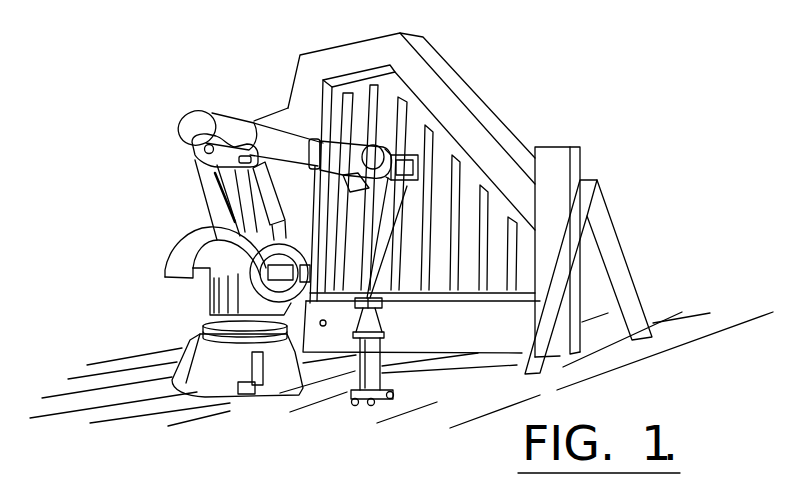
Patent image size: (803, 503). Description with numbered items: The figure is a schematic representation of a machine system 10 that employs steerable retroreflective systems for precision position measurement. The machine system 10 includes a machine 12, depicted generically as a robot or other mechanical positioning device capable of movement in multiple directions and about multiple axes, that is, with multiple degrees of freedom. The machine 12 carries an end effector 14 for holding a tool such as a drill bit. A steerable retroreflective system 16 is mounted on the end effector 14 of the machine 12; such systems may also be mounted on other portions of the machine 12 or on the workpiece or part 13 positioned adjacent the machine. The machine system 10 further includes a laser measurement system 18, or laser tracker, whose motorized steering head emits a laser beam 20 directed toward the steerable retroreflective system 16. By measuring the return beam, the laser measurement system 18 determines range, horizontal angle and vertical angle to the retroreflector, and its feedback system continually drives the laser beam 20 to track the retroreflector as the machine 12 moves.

The machine system 10 is at (562, 56).
The machine 12 is at (215, 388).
The workpiece or part 13 is at (510, 133).
The end effector 14 is at (387, 147).
The steerable retroreflective system 16 is at (415, 151).
The laser measurement system 18 is at (370, 378).
The laser beam 20 is at (382, 247).